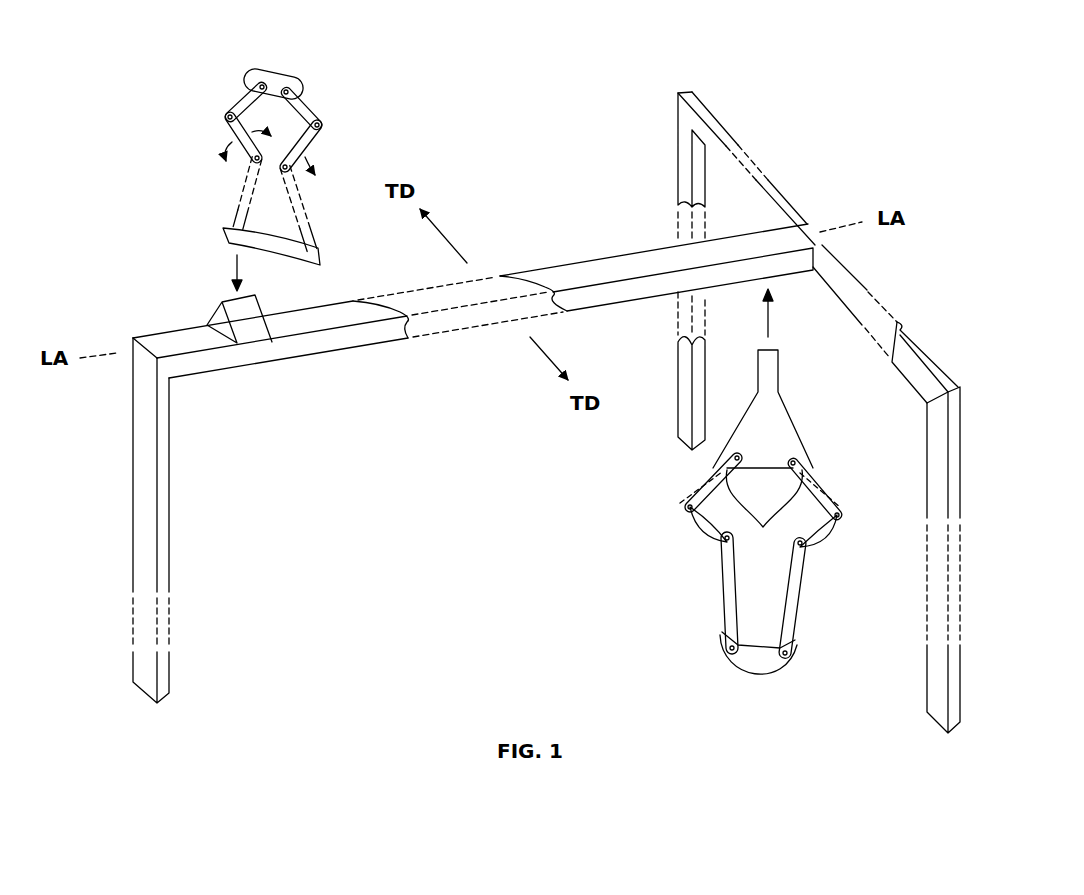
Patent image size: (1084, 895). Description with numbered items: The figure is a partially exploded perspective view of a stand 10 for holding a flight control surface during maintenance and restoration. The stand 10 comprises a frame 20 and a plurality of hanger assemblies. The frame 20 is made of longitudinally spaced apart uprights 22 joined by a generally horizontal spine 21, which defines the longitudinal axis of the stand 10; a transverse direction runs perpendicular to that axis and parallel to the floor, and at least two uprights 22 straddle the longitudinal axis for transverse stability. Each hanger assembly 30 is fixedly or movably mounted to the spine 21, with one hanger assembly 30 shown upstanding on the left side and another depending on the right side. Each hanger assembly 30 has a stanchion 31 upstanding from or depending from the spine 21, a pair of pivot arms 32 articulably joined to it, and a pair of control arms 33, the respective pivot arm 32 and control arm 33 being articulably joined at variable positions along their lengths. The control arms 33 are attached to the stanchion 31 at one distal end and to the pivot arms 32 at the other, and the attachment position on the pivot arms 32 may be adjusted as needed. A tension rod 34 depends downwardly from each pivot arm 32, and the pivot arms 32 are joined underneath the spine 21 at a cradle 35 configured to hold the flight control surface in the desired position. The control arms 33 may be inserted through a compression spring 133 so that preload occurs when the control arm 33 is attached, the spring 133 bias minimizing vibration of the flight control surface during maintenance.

The stand 10 is at (489, 499).
The frame 20 is at (568, 216).
The spine 21 is at (187, 340).
The upright 22 is at (150, 502).
The hanger assembly 30 is at (160, 73).
The stanchion 31 is at (272, 82).
The pivot arm 32 is at (238, 130).
The control arm 33 is at (242, 105).
The tension rod 34 is at (237, 212).
The cradle 35 is at (287, 258).
The compression spring 133 is at (763, 527).